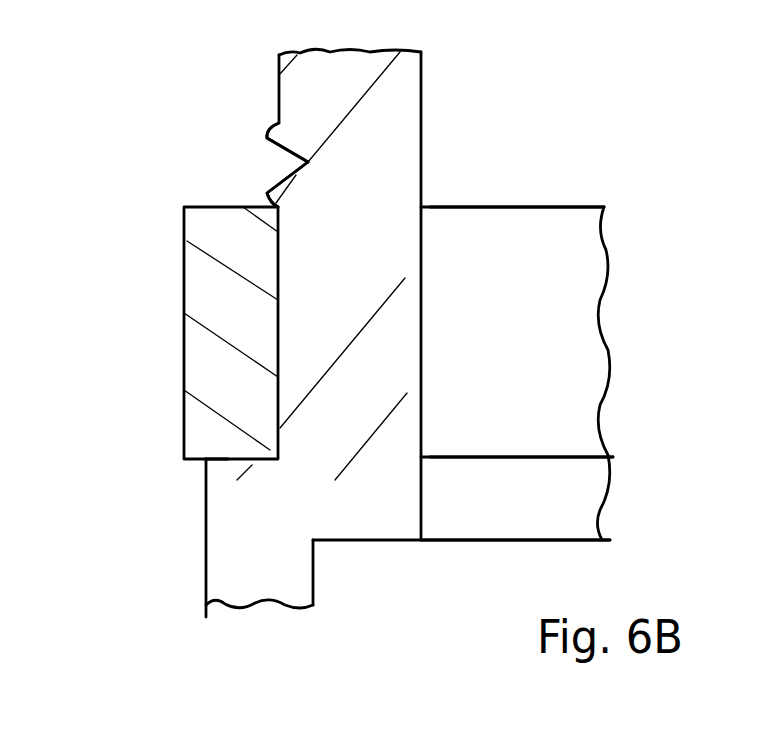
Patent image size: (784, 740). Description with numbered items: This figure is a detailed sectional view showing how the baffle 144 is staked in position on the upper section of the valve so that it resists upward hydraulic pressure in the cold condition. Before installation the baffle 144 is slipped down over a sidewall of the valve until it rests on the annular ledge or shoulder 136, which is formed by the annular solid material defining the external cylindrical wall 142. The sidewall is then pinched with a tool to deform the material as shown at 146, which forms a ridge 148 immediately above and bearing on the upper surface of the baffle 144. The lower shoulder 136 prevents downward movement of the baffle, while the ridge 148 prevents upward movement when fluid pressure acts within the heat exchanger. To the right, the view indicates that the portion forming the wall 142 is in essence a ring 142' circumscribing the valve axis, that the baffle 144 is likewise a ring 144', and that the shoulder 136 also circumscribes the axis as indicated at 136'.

The shoulder 136 is at (148, 458).
The external cylindrical wall 142 is at (194, 538).
The baffle 144 is at (166, 333).
The deformed material 146 is at (287, 158).
The ridge 148 is at (267, 193).
The ring 144' is at (555, 165).
The circumscribing shoulder 136' is at (587, 405).
The ring 142' is at (573, 485).